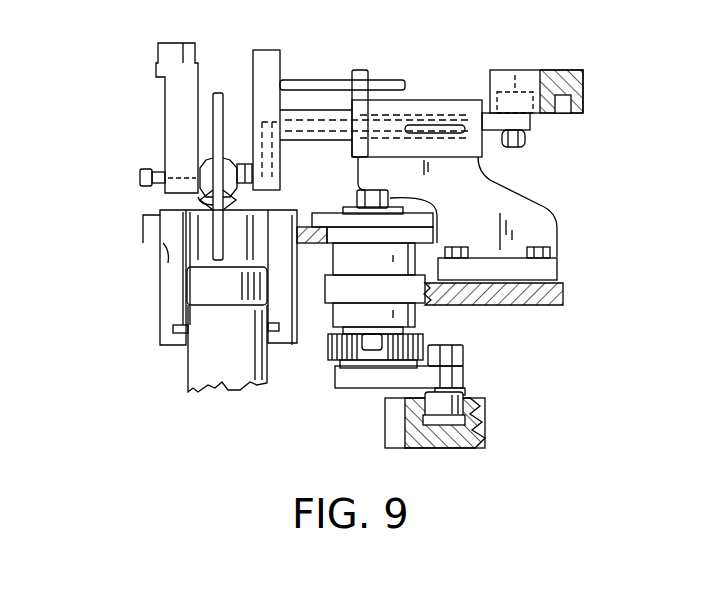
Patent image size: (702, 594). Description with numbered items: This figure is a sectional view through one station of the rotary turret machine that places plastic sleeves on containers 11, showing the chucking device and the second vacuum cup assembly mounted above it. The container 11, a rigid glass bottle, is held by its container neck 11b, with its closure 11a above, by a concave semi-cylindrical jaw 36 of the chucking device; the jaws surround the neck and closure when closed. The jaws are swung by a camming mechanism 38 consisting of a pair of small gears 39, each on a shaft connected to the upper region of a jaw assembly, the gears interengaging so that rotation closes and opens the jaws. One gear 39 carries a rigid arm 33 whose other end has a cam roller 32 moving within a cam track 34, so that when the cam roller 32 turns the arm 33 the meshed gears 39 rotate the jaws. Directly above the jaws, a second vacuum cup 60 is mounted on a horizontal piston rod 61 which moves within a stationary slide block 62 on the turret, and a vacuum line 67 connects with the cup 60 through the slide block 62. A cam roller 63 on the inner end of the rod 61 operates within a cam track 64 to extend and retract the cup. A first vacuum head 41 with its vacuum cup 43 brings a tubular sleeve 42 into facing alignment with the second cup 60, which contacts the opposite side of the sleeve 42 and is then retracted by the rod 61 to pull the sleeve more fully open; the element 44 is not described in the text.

The container 11 is at (216, 395).
The closure 11a is at (198, 289).
The container neck 11b is at (186, 365).
The cam roller 32 is at (462, 397).
The rigid arm 33 is at (352, 380).
The cam track 34 is at (445, 422).
The jaw 36 is at (153, 229).
The camming mechanism 38 is at (366, 393).
The small gears 39 is at (427, 334).
The first vacuum head 41 is at (167, 128).
The tubular sleeve 42 is at (217, 90).
The vacuum cup 43 is at (212, 201).
The set screw 44 is at (140, 174).
The second vacuum cup 60 is at (229, 193).
The horizontal piston rod 61 is at (308, 112).
The slide block 62 is at (425, 100).
The cam roller 63 is at (556, 80).
The cam track 64 is at (513, 95).
The vacuum line 67 is at (428, 131).